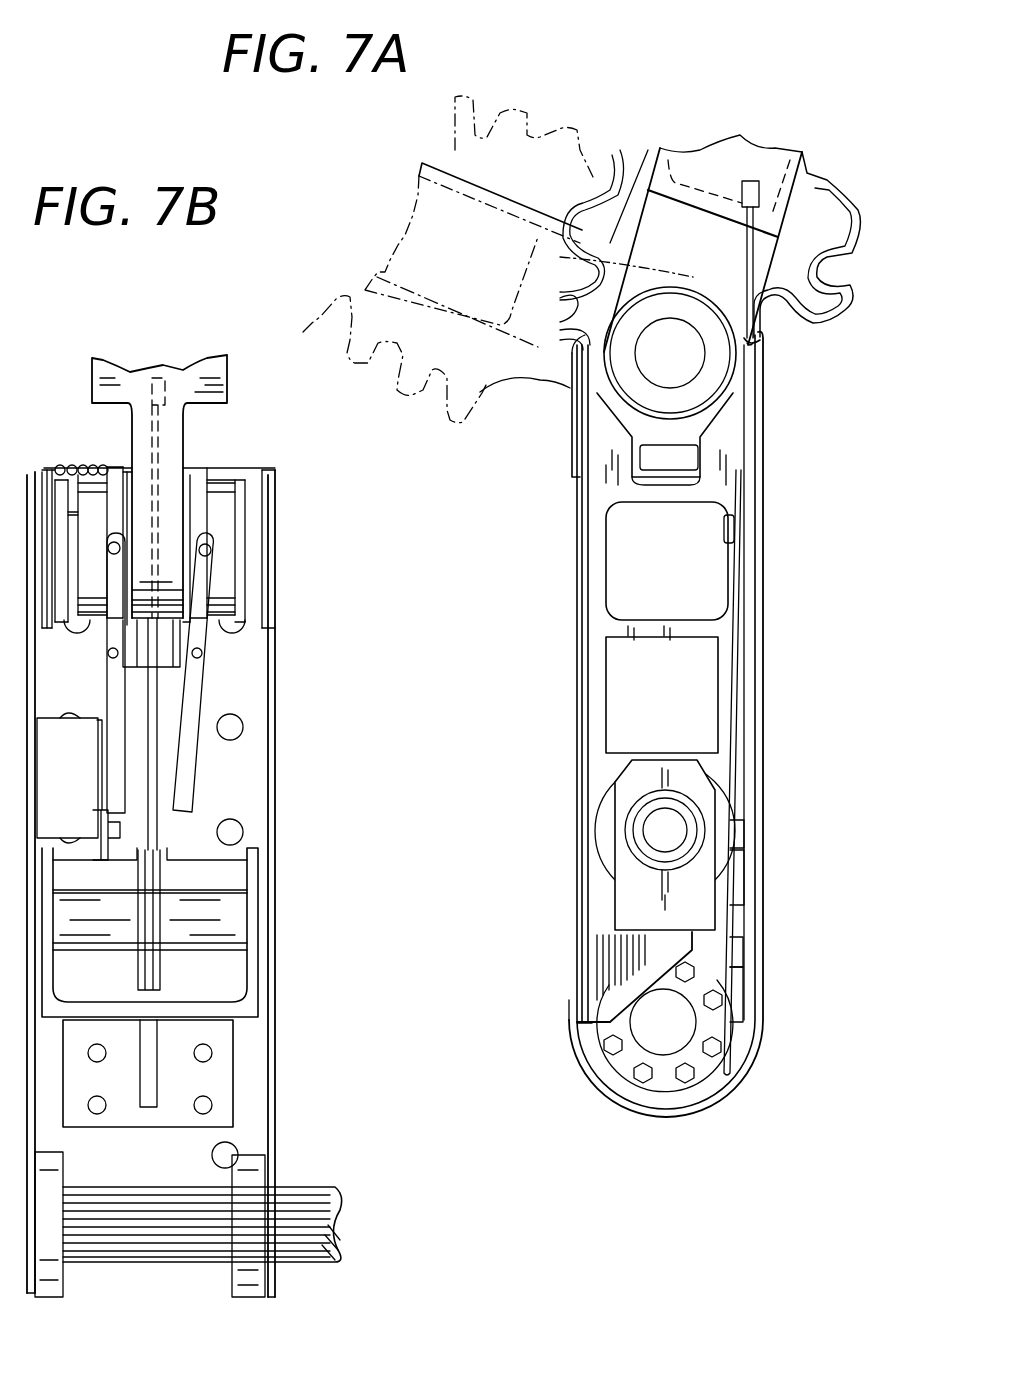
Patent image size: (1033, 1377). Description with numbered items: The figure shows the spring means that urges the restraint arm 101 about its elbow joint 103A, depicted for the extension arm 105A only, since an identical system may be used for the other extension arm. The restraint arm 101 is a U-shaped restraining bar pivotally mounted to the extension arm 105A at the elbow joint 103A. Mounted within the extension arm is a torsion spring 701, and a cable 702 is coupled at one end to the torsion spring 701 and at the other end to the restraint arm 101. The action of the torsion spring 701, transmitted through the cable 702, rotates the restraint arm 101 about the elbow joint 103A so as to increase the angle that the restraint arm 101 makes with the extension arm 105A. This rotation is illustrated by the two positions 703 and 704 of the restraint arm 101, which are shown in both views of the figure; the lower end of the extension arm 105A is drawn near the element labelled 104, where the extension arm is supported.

In FIG. 7A, the restraint arm 101 is at (713, 150).
In FIG. 7B, the restraint arm 101 is at (105, 378).
In FIG. 7A, the elbow joint 103A is at (660, 353).
In FIG. 7A, the roller 104 is at (663, 1022).
In FIG. 7B, the roller 104 is at (345, 1192).
In FIG. 7A, the extension arm 105A is at (763, 748).
In FIG. 7B, the extension arm 105A is at (277, 705).
In FIG. 7A, the torsion spring 701 is at (603, 820).
In FIG. 7B, the torsion spring 701 is at (163, 923).
In FIG. 7A, the cable 702 is at (648, 150).
In FIG. 7B, the cable 702 is at (157, 775).
In FIG. 7A, the first position of restraint arm 703 is at (485, 185).
In FIG. 7A, the second position of restraint arm 704 is at (805, 183).